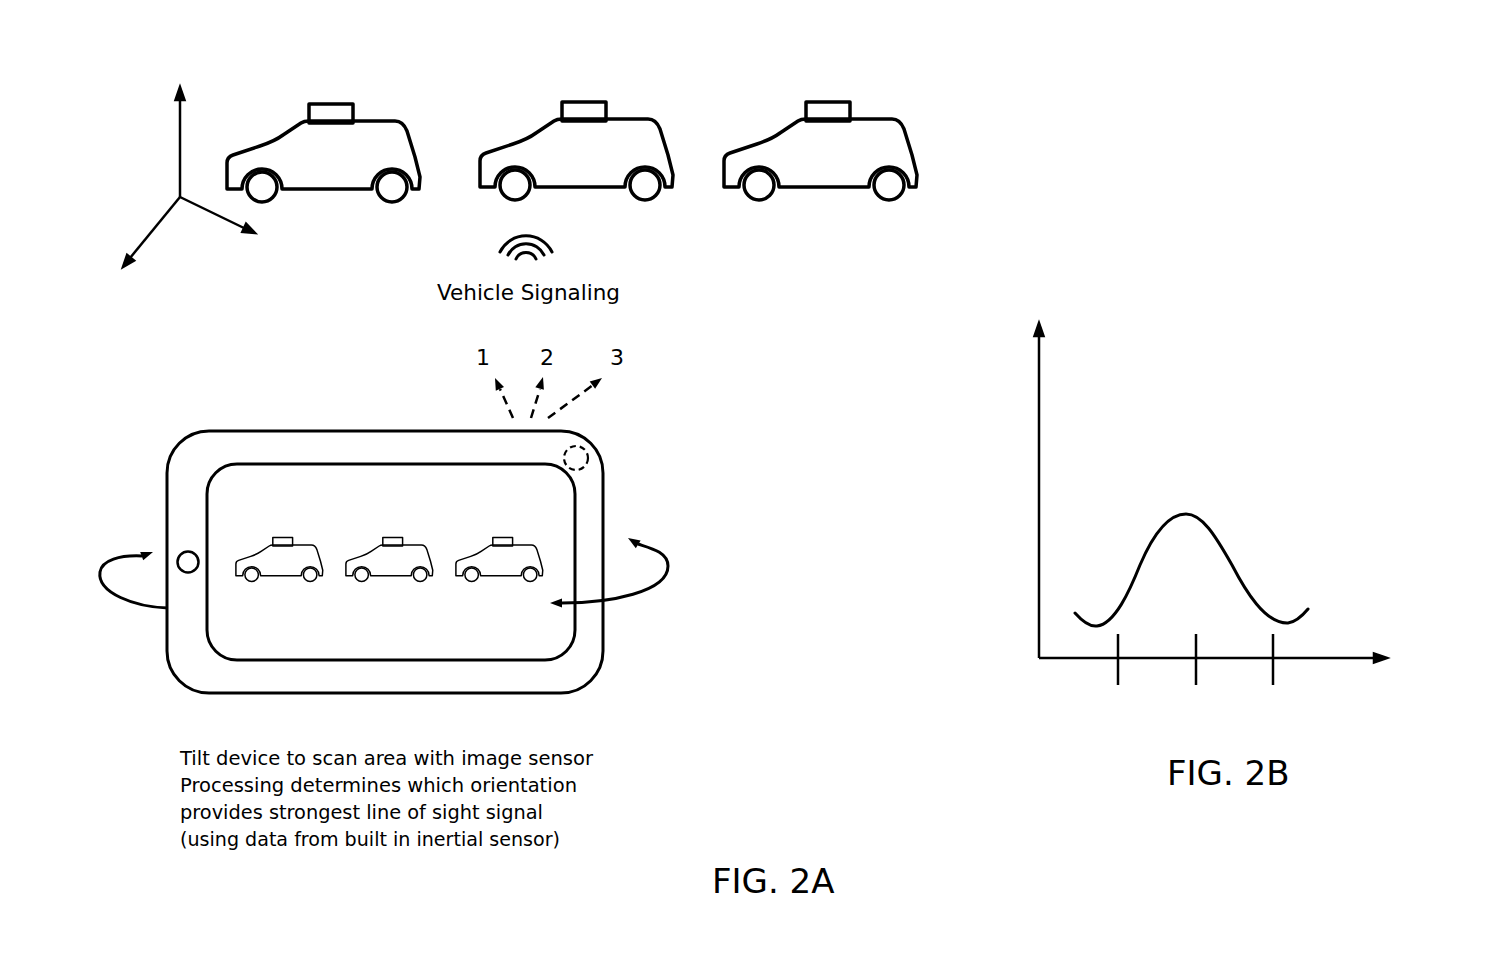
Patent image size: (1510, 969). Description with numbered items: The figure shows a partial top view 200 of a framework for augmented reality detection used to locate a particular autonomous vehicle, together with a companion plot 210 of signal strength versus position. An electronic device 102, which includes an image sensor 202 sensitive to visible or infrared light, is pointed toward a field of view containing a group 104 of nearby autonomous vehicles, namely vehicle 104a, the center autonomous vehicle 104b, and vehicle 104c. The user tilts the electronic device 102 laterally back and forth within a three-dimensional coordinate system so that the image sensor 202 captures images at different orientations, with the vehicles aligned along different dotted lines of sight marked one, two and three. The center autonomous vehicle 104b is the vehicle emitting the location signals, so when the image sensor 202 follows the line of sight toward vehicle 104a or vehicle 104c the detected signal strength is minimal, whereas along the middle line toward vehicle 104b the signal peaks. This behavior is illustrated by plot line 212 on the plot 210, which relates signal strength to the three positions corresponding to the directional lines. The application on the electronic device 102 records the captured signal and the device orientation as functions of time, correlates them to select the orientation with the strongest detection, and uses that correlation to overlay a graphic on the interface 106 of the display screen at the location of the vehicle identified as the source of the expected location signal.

In FIG. 2A, the partial top view 200 is at (289, 78).
In FIG. 2A, the group of nearby autonomous vehicles 104 is at (632, 138).
In FIG. 2A, the vehicle 104a is at (370, 118).
In FIG. 2A, the center autonomous vehicle 104b is at (622, 117).
In FIG. 2A, the vehicle 104c is at (860, 115).
In FIG. 2A, the electronic device 102 is at (597, 673).
In FIG. 2A, the interface of the display screen 106 is at (549, 506).
In FIG. 2A, the image sensor 202 is at (590, 449).
In FIG. 2B, the plot 210 is at (1256, 513).
In FIG. 2B, the plot line 212 is at (1208, 519).